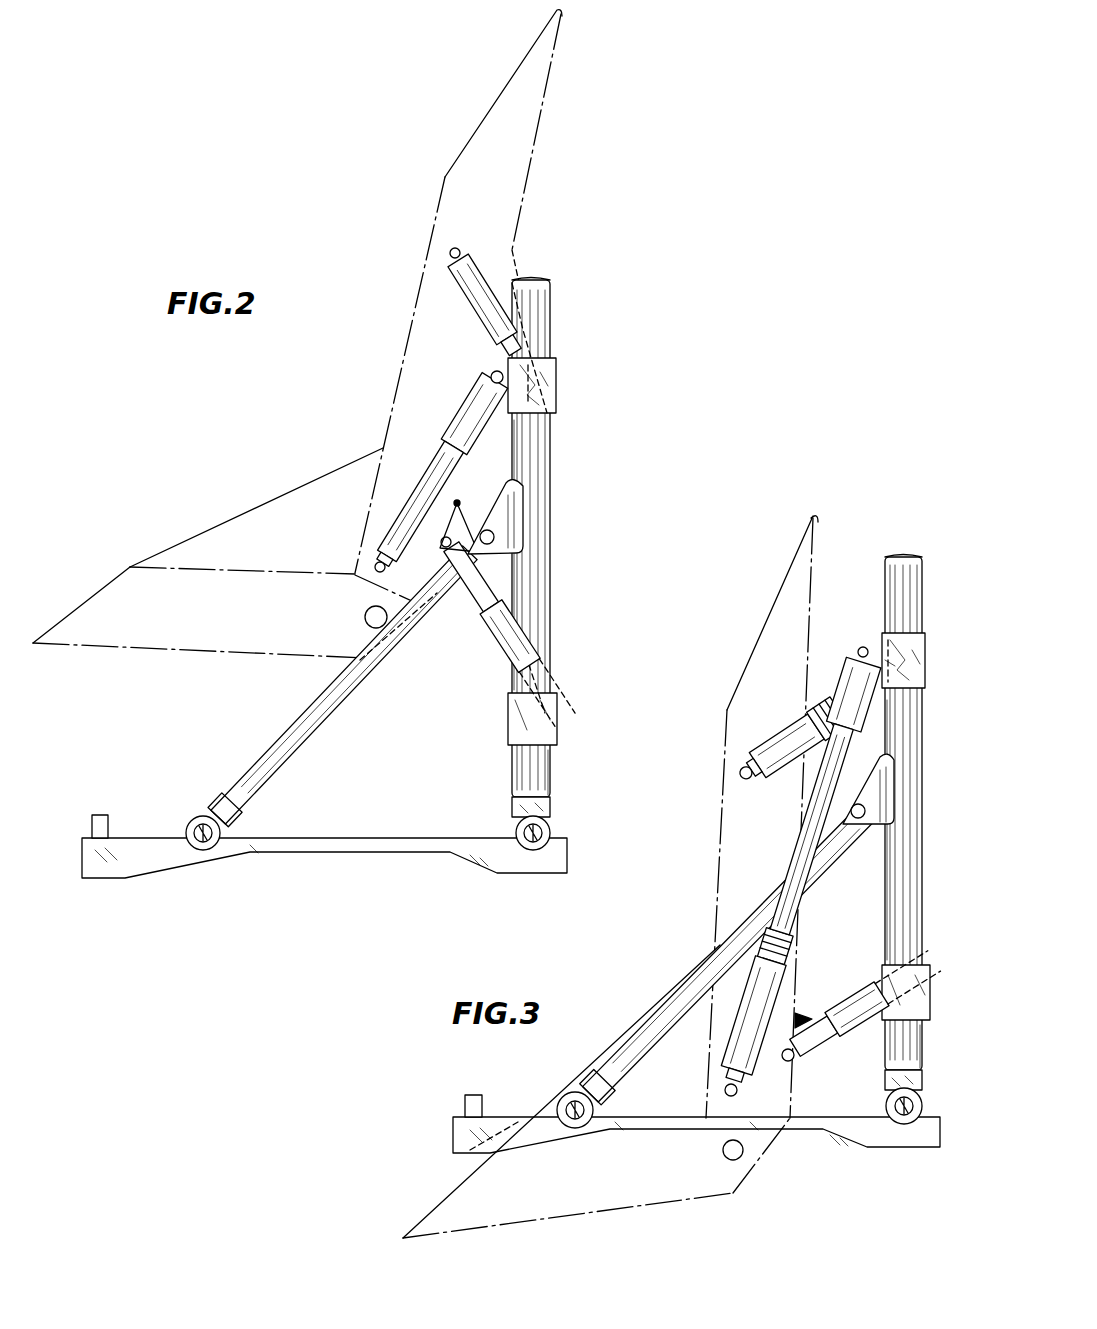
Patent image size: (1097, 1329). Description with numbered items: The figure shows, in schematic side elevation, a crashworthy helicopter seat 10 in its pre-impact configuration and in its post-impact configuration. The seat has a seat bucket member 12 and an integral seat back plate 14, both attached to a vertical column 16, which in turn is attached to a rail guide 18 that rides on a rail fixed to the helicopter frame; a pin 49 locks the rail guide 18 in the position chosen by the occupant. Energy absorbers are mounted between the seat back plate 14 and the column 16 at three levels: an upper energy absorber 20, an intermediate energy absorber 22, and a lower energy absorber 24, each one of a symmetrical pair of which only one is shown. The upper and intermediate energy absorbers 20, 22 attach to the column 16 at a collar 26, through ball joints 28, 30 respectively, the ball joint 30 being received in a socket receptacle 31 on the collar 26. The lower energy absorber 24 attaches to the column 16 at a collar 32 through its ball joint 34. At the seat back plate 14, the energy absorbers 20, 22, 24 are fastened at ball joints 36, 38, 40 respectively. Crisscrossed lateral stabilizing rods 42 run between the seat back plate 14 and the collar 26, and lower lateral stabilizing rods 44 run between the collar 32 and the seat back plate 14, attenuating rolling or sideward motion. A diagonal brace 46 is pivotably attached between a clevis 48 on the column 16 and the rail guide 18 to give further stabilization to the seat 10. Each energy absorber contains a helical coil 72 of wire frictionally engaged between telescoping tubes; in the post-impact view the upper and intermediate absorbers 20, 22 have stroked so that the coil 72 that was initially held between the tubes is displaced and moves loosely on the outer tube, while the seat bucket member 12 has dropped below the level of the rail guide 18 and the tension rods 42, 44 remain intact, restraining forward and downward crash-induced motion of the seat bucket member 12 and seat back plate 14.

In FIG. 2, the seat 10 is at (388, 375).
In FIG. 3, the seat 10 is at (712, 807).
In FIG. 2, the seat bucket member 12 is at (140, 575).
In FIG. 3, the seat bucket member 12 is at (470, 1170).
In FIG. 2, the seat back plate 14 is at (542, 58).
In FIG. 3, the seat back plate 14 is at (806, 542).
In FIG. 2, the vertical column 16 is at (540, 457).
In FIG. 3, the vertical column 16 is at (915, 580).
In FIG. 2, the rail guide 18 is at (388, 848).
In FIG. 3, the rail guide 18 is at (805, 1118).
In FIG. 2, the energy absorbers 20 is at (468, 270).
In FIG. 2, the intermediate energy absorbers 22 is at (488, 402).
In FIG. 3, the intermediate energy absorbers 22 is at (813, 805).
In FIG. 2, the lower energy absorbers 24 is at (470, 598).
In FIG. 3, the lower energy absorbers 24 is at (805, 1055).
In FIG. 2, the collar 26 is at (534, 443).
In FIG. 3, the collar 26 is at (910, 632).
In FIG. 2, the ball joints 28 is at (556, 388).
In FIG. 3, the ball joints 28 is at (903, 660).
In FIG. 2, the ball joint 30 is at (490, 374).
In FIG. 2, the socket receptacle 31 is at (525, 388).
In FIG. 3, the socket receptacle 31 is at (892, 650).
In FIG. 2, the collar 32 is at (541, 736).
In FIG. 3, the collar 32 is at (904, 1025).
In FIG. 2, the ball joint 34 is at (552, 706).
In FIG. 3, the ball joint 34 is at (914, 974).
In FIG. 2, the ball joint 36 is at (454, 248).
In FIG. 3, the ball joint 36 is at (863, 648).
In FIG. 2, the ball joint 38 is at (372, 564).
In FIG. 3, the ball joint 38 is at (724, 1092).
In FIG. 2, the ball joint 40 is at (440, 520).
In FIG. 2, the lateral stabilizing rods 42 is at (530, 297).
In FIG. 3, the lateral stabilizing rods 42 is at (900, 686).
In FIG. 2, the lower lateral stabilizing rods 44 is at (488, 543).
In FIG. 3, the lower lateral stabilizing rods 44 is at (808, 1018).
In FIG. 2, the diagonal brace 46 is at (284, 754).
In FIG. 3, the diagonal brace 46 is at (740, 926).
In FIG. 2, the clevis 48 is at (510, 517).
In FIG. 3, the clevis 48 is at (880, 828).
In FIG. 2, the pin 49 is at (86, 817).
In FIG. 3, the pin 49 is at (478, 1093).
In FIG. 3, the helical coil 72 is at (808, 722).